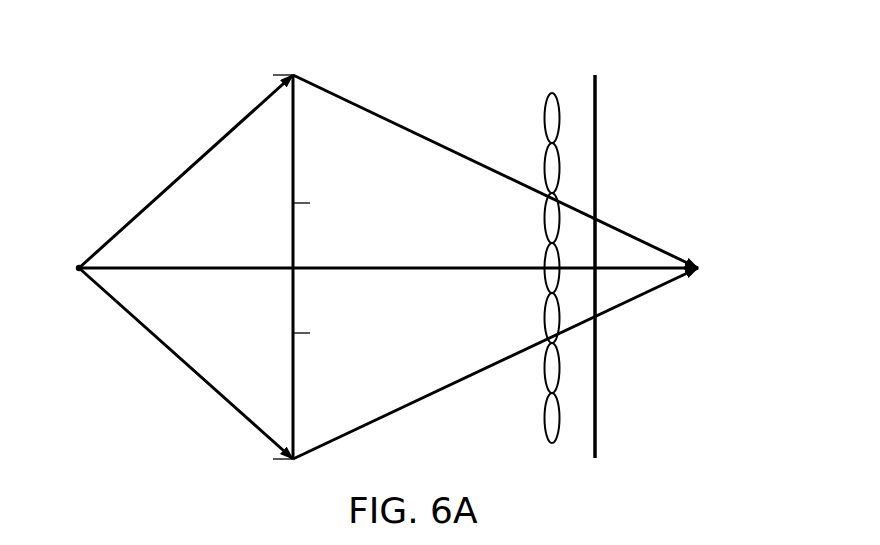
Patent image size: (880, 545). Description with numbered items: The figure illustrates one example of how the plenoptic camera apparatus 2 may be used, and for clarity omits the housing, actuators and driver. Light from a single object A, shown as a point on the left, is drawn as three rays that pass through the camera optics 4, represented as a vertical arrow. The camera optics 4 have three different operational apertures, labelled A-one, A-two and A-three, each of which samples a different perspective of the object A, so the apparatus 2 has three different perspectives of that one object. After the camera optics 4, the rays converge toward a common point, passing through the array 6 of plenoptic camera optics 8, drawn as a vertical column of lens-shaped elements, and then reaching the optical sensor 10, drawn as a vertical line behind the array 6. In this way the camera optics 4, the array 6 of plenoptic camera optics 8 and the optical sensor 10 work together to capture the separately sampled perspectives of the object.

The plenoptic camera apparatus 2 is at (742, 96).
The camera optics 4 is at (292, 73).
The array 6 is at (545, 120).
The plenoptic camera optics 8 is at (545, 368).
The optical sensor 10 is at (597, 115).